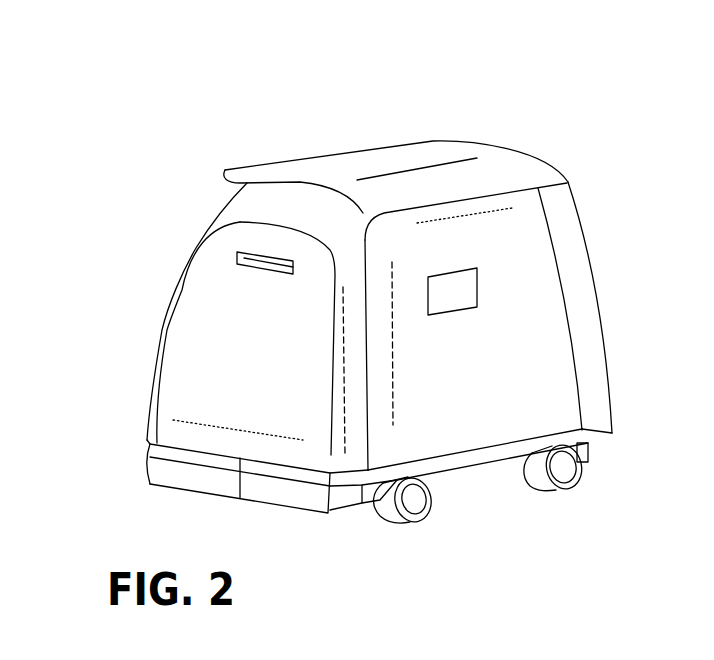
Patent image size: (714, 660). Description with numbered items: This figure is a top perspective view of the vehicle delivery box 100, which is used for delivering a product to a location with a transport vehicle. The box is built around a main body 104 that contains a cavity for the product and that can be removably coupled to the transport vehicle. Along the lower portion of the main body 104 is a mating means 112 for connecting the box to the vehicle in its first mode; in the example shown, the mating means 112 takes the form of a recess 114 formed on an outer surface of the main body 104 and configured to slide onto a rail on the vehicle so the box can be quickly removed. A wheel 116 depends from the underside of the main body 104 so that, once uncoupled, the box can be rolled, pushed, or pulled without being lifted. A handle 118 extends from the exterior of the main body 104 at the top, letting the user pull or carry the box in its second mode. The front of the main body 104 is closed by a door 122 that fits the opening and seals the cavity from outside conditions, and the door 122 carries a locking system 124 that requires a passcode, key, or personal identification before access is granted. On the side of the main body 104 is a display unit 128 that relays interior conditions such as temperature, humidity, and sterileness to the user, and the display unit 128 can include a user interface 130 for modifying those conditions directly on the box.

The vehicle delivery box 100 is at (346, 306).
The main body 104 is at (418, 322).
The mating means 112 is at (254, 493).
The recess 114 is at (197, 475).
The wheel 116 is at (563, 470).
The handle 118 is at (247, 177).
The door 122 is at (182, 327).
The locking system 124 is at (250, 262).
The display unit 128 is at (452, 340).
The user interface 130 is at (455, 300).